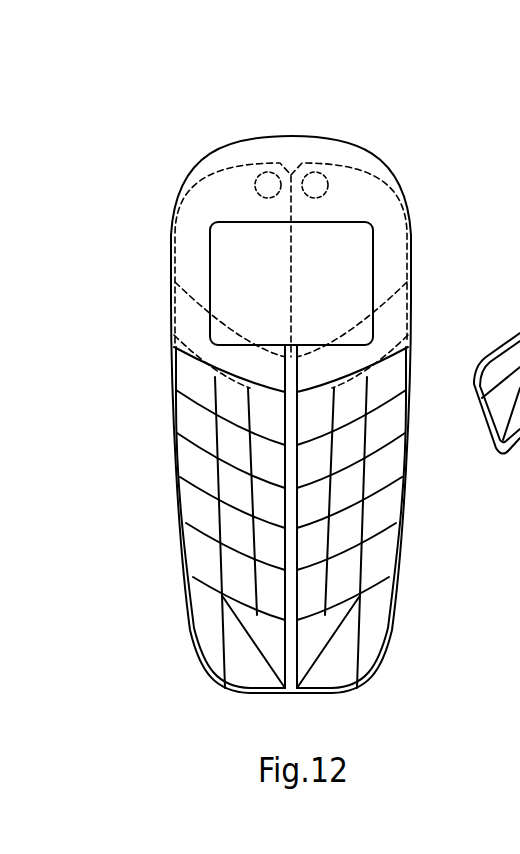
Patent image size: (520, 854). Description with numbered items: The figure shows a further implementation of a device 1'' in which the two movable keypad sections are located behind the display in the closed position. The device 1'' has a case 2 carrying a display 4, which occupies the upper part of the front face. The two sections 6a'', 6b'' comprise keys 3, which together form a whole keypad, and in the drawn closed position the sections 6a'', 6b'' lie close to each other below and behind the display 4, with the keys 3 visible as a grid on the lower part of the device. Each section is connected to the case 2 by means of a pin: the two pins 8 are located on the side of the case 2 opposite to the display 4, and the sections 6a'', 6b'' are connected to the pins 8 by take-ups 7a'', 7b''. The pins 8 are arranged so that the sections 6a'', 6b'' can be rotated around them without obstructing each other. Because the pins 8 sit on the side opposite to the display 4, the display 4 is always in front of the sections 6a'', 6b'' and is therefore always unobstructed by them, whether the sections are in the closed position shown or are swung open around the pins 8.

The device 1'' is at (331, 388).
The case 2 is at (368, 160).
The keys 3 is at (388, 507).
The display 4 is at (240, 238).
The section 6a'' is at (394, 287).
The section 6b'' is at (199, 267).
The take-up 7a'' is at (349, 196).
The take-up 7b'' is at (233, 198).
The pins 8 is at (308, 177).